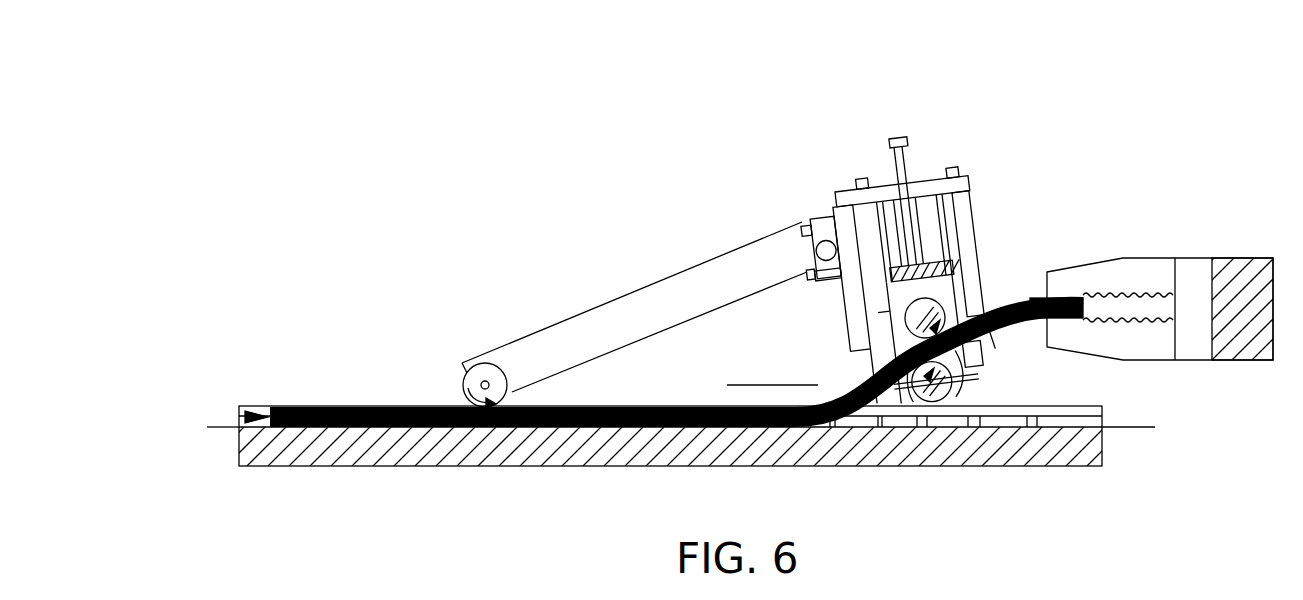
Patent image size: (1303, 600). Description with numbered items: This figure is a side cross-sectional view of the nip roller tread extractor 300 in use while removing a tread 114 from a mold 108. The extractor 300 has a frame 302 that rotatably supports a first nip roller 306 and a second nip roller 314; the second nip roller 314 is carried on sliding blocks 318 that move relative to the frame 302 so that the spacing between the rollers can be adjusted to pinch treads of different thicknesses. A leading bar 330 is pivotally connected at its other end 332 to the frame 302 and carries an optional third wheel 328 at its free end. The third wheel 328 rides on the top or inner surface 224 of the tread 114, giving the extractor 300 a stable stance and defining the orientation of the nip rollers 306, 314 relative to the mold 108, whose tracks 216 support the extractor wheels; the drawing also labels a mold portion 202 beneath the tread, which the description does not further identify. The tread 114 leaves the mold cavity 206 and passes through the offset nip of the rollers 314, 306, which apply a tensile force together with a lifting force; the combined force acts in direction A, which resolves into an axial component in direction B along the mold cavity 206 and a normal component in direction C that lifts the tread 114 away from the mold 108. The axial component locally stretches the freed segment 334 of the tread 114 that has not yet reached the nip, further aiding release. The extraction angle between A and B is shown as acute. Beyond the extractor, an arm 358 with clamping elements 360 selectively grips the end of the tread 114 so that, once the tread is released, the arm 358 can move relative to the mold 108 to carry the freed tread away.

The nip roller tread extractor 300 is at (975, 128).
The frame 302 is at (958, 220).
The first nip roller 306 is at (962, 392).
The second nip roller 314 is at (940, 308).
The sliding blocks 318 is at (897, 292).
The third wheel 328 is at (477, 378).
The leading bar 330 is at (627, 312).
The other end of the leading bar 332 is at (822, 225).
The segment of the tread 334 is at (870, 400).
The inner surface of the tread 224 is at (298, 405).
The mold cavity 206 is at (243, 416).
The mold 108 is at (1057, 450).
The support layer 202 is at (940, 423).
The tracks 216 is at (1130, 428).
The tread 114 is at (1040, 300).
The clamping elements 360 is at (1133, 278).
The arm 358 is at (1223, 275).
The combined force direction A is at (823, 383).
The axial force direction B is at (810, 420).
The normal force direction C is at (722, 392).